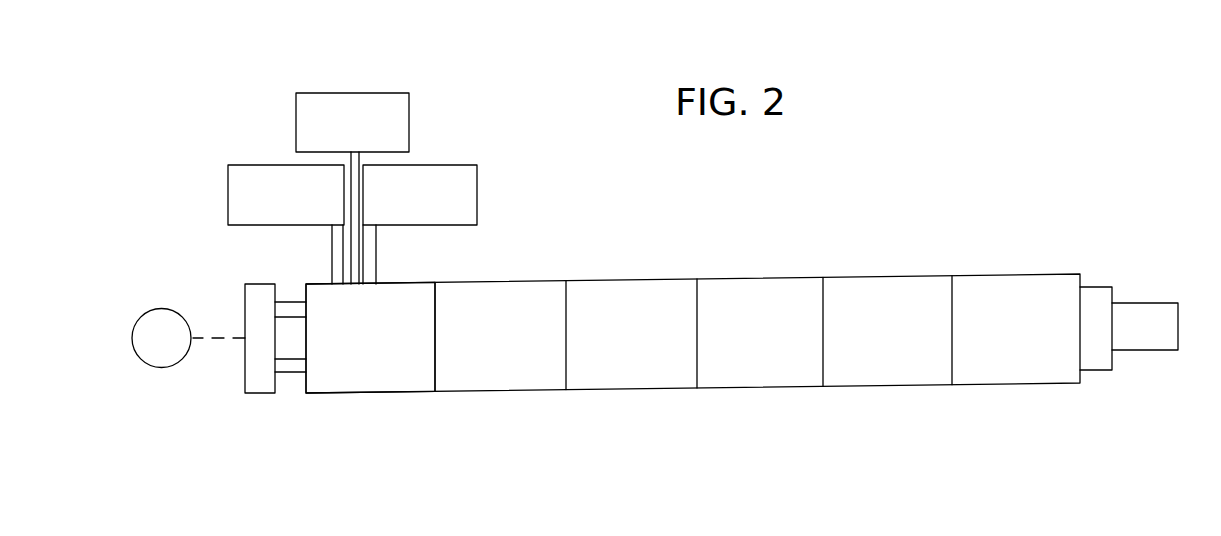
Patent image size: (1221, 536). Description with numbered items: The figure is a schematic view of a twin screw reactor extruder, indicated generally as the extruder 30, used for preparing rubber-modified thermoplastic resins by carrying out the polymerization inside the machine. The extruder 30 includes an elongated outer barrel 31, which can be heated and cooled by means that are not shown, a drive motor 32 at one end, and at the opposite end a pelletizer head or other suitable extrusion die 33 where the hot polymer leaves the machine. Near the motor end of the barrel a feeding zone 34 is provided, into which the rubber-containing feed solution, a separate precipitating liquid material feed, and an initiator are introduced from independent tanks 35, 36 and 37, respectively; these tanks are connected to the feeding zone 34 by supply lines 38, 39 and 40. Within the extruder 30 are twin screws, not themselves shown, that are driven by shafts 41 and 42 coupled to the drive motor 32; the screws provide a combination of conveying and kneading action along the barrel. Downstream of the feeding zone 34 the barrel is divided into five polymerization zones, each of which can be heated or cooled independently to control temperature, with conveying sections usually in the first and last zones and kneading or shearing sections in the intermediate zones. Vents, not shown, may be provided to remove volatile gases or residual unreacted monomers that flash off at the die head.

The extruder 30 is at (1007, 217).
The outer barrel 31 is at (855, 275).
The drive motor 32 is at (170, 360).
The extrusion die 33 is at (1155, 313).
The feeding zone 34 is at (393, 385).
The tank 35 is at (248, 178).
The tank 36 is at (460, 178).
The tank 37 is at (385, 108).
The supply line 38 is at (335, 242).
The supply line 39 is at (373, 252).
The supply line 40 is at (355, 260).
The shaft 41 is at (287, 305).
The shaft 42 is at (292, 370).